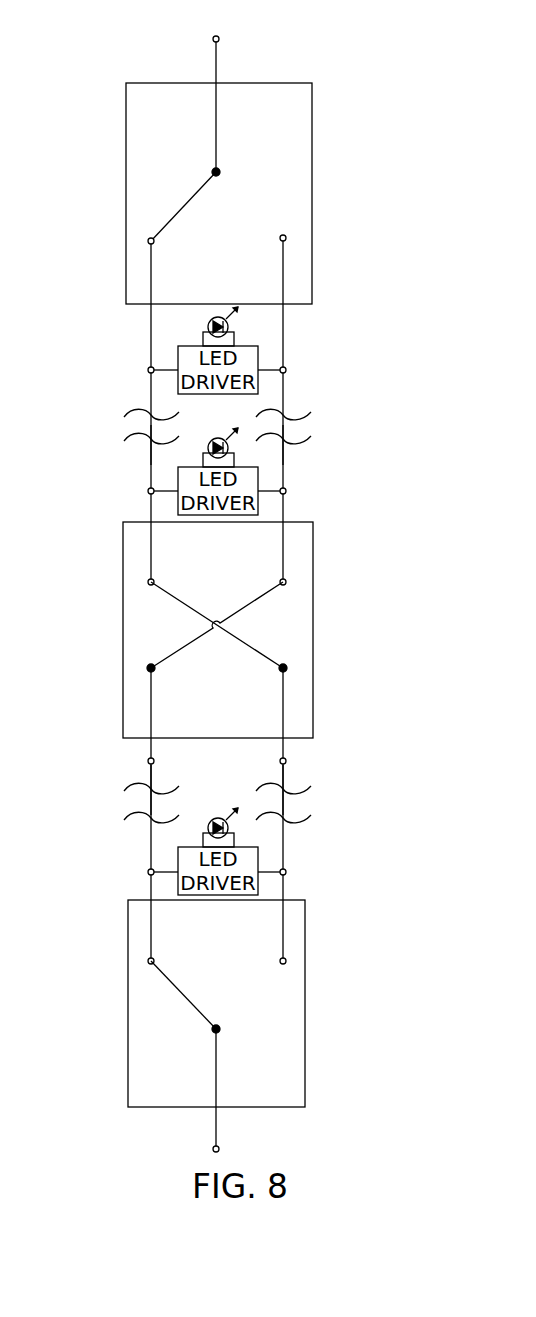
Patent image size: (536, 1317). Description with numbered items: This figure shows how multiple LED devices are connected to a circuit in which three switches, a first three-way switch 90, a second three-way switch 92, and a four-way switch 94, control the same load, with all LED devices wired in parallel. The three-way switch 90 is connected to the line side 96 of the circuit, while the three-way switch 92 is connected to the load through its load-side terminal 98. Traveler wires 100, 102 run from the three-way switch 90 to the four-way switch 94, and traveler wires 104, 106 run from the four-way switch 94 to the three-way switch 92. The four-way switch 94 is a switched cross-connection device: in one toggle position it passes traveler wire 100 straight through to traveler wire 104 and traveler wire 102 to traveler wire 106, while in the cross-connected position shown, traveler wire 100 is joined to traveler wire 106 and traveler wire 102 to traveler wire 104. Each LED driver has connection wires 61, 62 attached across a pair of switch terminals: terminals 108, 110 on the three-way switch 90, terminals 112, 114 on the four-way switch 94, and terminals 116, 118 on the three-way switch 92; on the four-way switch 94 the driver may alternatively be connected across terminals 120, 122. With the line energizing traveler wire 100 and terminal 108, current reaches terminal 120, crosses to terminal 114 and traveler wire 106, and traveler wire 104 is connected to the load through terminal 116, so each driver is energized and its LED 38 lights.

The LED 38 is at (206, 322).
The connection wire 61 is at (167, 369).
The connection wire 62 is at (271, 368).
The 3-way switch 90 is at (305, 922).
The 3-way switch 92 is at (312, 88).
The 4-way switch 94 is at (313, 536).
The line side 96 is at (220, 1148).
The load side 98 is at (219, 38).
The traveler wire 100 is at (150, 782).
The traveler wire 102 is at (287, 779).
The traveler wire 104 is at (150, 449).
The traveler wire 106 is at (287, 465).
The terminal 108 is at (148, 870).
The terminal 110 is at (287, 873).
The terminal 112 is at (148, 492).
The terminal 114 is at (287, 491).
The terminal 116 is at (148, 371).
The terminal 118 is at (287, 371).
The terminal 120 is at (148, 759).
The terminal 122 is at (287, 760).